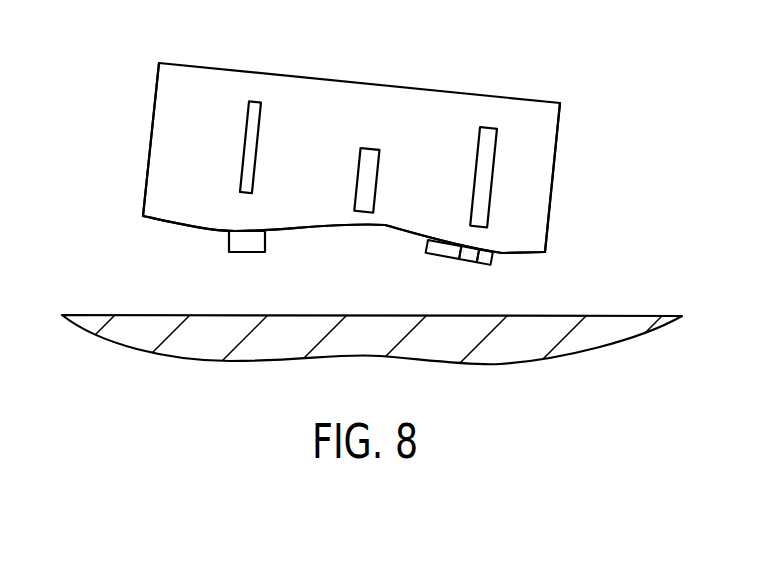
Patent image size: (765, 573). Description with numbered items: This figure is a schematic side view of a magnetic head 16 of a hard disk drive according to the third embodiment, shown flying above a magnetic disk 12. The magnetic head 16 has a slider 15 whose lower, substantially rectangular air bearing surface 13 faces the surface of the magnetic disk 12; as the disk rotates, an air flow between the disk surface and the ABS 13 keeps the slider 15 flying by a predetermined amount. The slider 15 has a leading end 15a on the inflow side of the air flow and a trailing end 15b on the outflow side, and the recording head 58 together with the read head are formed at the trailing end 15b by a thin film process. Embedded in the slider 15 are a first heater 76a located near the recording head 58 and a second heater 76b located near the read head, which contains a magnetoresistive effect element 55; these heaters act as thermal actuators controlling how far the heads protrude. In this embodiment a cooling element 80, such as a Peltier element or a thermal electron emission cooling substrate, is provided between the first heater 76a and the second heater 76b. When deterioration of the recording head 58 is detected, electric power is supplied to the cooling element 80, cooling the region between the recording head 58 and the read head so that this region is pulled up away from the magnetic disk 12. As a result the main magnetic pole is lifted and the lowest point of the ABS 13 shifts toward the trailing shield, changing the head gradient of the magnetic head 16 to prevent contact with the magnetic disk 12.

The magnetic disk 12 is at (578, 339).
The air bearing surface 13 is at (167, 221).
The slider 15 is at (317, 95).
The leading end 15a is at (555, 168).
The trailing end 15b is at (148, 157).
The magnetic head 16 is at (141, 91).
The magnetoresistive effect element 55 is at (247, 247).
The recording head 58 is at (456, 227).
The first heater 76a is at (474, 152).
The second heater 76b is at (243, 120).
The cooling element 80 is at (369, 148).